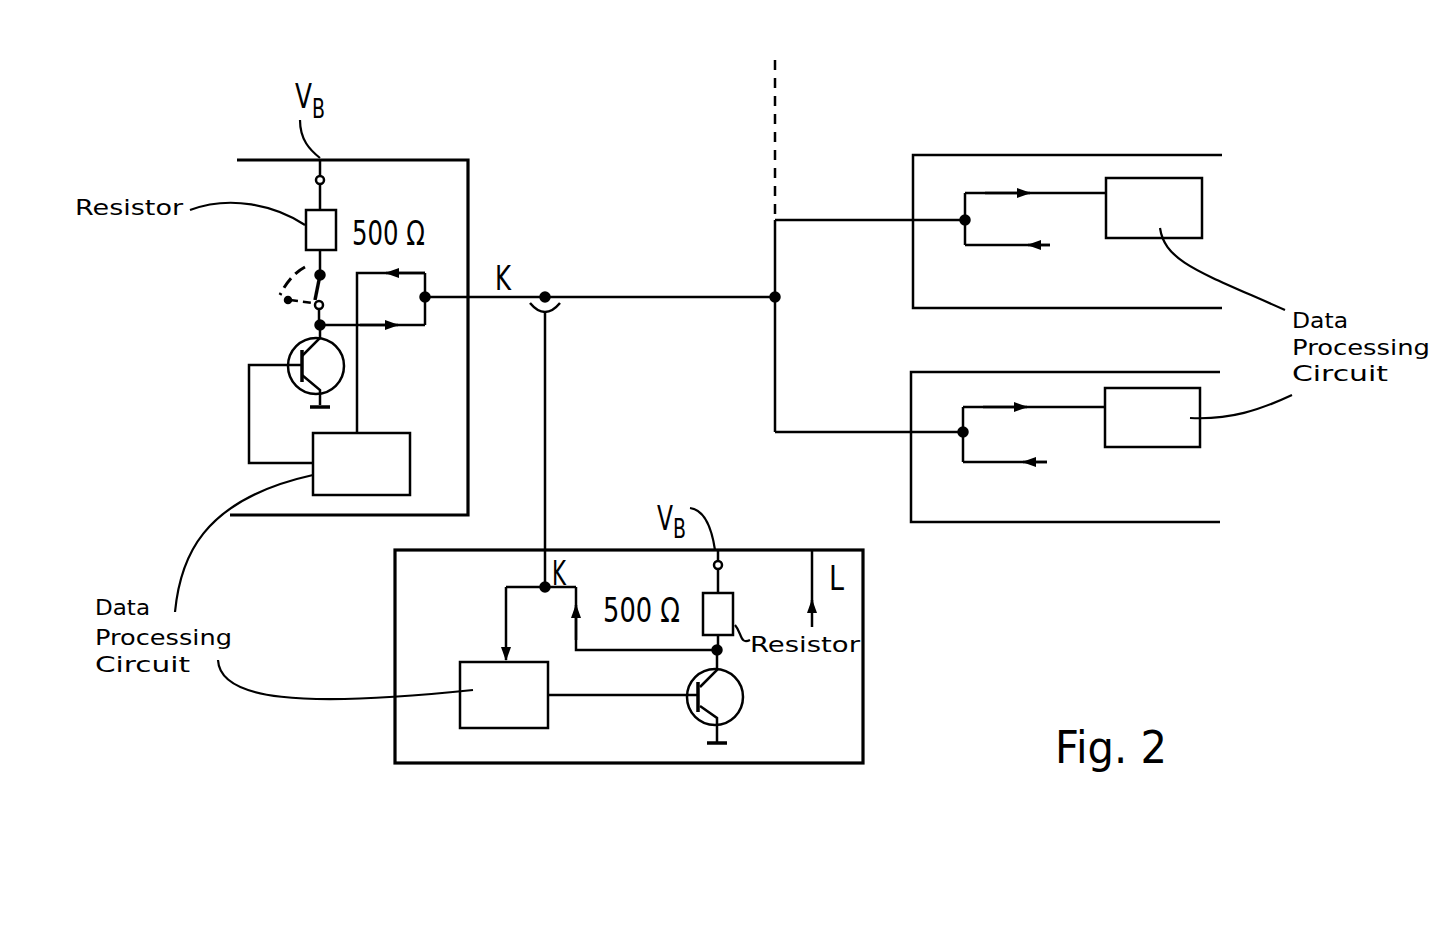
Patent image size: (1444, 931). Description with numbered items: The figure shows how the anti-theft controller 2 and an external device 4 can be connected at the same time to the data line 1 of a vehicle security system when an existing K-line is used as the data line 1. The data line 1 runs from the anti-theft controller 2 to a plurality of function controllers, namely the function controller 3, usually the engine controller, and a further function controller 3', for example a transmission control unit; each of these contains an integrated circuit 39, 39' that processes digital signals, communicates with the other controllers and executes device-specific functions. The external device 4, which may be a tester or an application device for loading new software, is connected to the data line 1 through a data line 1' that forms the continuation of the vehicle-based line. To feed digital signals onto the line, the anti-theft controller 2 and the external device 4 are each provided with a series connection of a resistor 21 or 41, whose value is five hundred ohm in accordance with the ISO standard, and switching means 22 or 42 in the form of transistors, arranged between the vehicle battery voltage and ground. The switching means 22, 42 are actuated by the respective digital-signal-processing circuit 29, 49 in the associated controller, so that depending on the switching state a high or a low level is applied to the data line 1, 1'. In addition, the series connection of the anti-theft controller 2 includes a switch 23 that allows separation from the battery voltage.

The data line 1 is at (697, 248).
The data line 1' is at (571, 445).
The anti-theft controller 2 is at (447, 172).
The function controller 3 is at (1060, 205).
The function controller 3' is at (1065, 485).
The external device 4 is at (825, 735).
The resistor 21 is at (328, 225).
The switching means 22 is at (296, 343).
The switch 23 is at (282, 266).
The integrated circuit 29 is at (333, 487).
The integrated circuit 39 is at (1190, 228).
The integrated circuit 39' is at (1189, 446).
The resistor 41 is at (723, 610).
The switching means 42 is at (700, 715).
The integrated circuit 49 is at (497, 713).